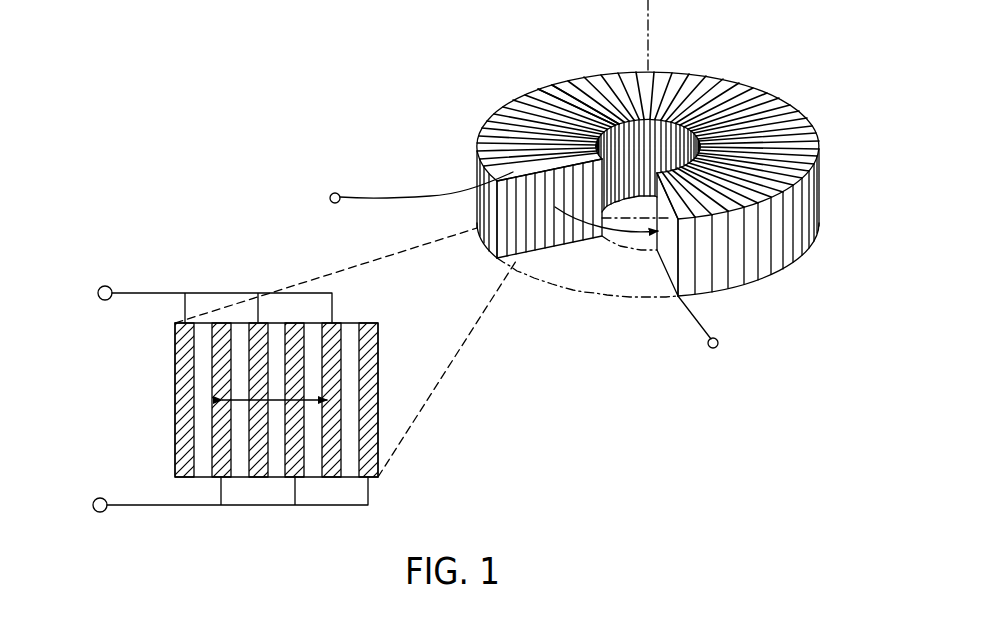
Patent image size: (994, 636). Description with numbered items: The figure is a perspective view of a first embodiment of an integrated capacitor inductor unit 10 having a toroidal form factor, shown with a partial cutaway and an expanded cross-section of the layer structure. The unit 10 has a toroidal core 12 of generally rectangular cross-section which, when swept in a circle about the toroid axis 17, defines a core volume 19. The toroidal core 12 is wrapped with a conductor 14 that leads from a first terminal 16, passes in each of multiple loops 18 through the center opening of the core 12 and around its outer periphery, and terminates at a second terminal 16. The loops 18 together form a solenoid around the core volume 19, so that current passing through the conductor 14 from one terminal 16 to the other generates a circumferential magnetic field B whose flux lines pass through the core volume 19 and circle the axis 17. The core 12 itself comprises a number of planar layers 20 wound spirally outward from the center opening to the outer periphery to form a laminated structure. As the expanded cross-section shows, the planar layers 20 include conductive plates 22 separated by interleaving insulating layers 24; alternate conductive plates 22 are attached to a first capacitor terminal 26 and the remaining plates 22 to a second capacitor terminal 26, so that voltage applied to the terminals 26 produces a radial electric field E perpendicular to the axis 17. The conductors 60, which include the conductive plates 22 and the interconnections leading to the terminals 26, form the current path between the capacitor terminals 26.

The integrated capacitor inductor unit 10 is at (742, 36).
The toroidal core 12 is at (565, 246).
The conductor 14 is at (455, 188).
The terminal 16 is at (331, 202).
The toroid axis 17 is at (650, 17).
The loops 18 is at (602, 77).
The core volume 19 is at (598, 270).
The planar layers 20 is at (240, 378).
The conductive plates 22 is at (183, 478).
The insulating layers 24 is at (345, 478).
The terminal 26 is at (107, 286).
The conductors 60 is at (155, 292).